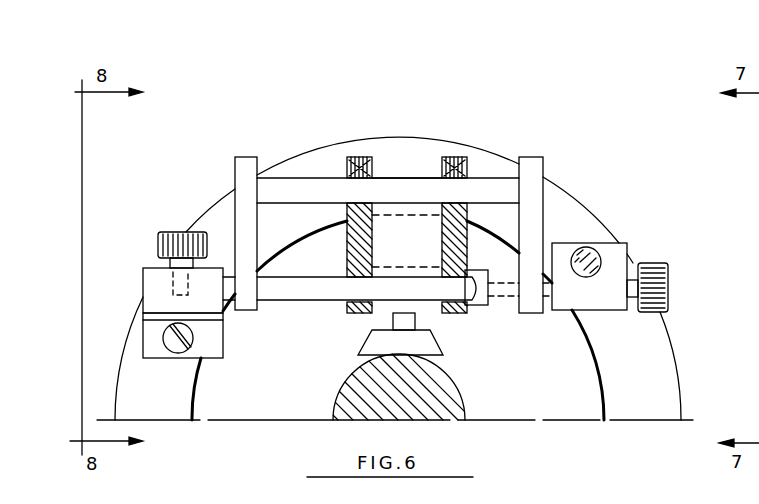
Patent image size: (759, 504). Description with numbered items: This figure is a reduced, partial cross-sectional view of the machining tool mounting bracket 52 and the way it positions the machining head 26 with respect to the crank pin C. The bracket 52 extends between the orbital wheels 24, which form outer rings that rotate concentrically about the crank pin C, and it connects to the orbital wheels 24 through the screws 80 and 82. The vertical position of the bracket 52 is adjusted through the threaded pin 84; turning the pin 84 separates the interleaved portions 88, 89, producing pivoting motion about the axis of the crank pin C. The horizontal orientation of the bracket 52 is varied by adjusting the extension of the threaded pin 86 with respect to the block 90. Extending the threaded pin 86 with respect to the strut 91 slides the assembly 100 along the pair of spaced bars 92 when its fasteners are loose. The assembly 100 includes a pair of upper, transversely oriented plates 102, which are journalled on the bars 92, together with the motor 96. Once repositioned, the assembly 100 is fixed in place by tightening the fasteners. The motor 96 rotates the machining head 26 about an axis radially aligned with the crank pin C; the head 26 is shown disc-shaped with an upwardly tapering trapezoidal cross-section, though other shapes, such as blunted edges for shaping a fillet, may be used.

The orbital wheels 24 is at (300, 157).
The machining head 26 is at (428, 342).
The machining tool mounting bracket 52 is at (445, 125).
The screw 80 is at (170, 347).
The screw 82 is at (595, 253).
The threaded pin 84 is at (182, 232).
The threaded pin 86 is at (670, 293).
The interleaved portion 88 is at (150, 338).
The interleaved portion 89 is at (150, 282).
The block 90 is at (608, 303).
The strut 91 is at (245, 162).
The spaced bars 92 is at (307, 194).
The motor 96 is at (418, 213).
The assembly 100 is at (393, 162).
The upper transversely oriented plates 102 is at (467, 168).
The crank pin C is at (353, 387).